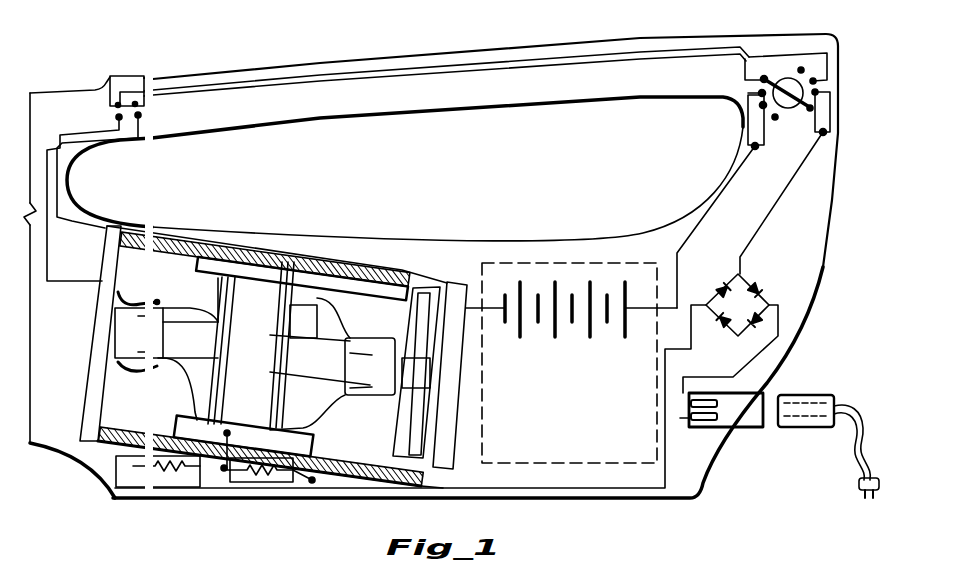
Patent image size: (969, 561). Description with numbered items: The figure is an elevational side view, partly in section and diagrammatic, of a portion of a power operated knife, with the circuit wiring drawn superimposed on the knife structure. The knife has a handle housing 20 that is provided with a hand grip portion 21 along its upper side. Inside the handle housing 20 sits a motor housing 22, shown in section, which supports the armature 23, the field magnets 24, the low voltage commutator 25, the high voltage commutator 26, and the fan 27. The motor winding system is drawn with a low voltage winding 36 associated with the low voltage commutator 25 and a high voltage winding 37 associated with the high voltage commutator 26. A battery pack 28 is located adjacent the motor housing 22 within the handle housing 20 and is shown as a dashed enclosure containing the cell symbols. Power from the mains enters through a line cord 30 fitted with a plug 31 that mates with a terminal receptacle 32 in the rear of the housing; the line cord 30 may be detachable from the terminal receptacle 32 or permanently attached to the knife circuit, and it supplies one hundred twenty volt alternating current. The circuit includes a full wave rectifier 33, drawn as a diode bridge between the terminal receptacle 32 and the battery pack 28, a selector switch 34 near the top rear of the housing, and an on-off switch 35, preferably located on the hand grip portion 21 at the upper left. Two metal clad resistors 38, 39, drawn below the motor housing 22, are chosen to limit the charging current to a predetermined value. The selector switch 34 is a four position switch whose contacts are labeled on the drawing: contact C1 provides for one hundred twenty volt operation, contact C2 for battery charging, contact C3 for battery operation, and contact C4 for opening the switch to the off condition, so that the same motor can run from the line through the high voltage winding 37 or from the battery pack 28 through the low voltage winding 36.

The handle housing 20 is at (822, 268).
The hand grip portion 21 is at (524, 50).
The motor housing 22 is at (112, 440).
The armature 23 is at (257, 292).
The field magnets 24 is at (293, 272).
The low voltage commutator 25 is at (128, 335).
The high voltage commutator 26 is at (383, 357).
The fan 27 is at (428, 302).
The battery 28 is at (555, 327).
The line cord 30 is at (856, 407).
The plug 31 is at (808, 395).
The terminal receptacle 32 is at (735, 413).
The full wave rectifier 33 is at (762, 292).
The selector switch 34 is at (782, 78).
The on-off switch 35 is at (127, 78).
The low voltage winding 36 is at (216, 290).
The high voltage winding 37 is at (318, 301).
The metal clad resistor 38 is at (175, 488).
The metal clad resistor 39 is at (263, 481).
The selector switch contact C1 is at (764, 79).
The selector switch contact C2 is at (760, 93).
The selector switch contact C3 is at (763, 105).
The selector switch contact C4 is at (775, 118).